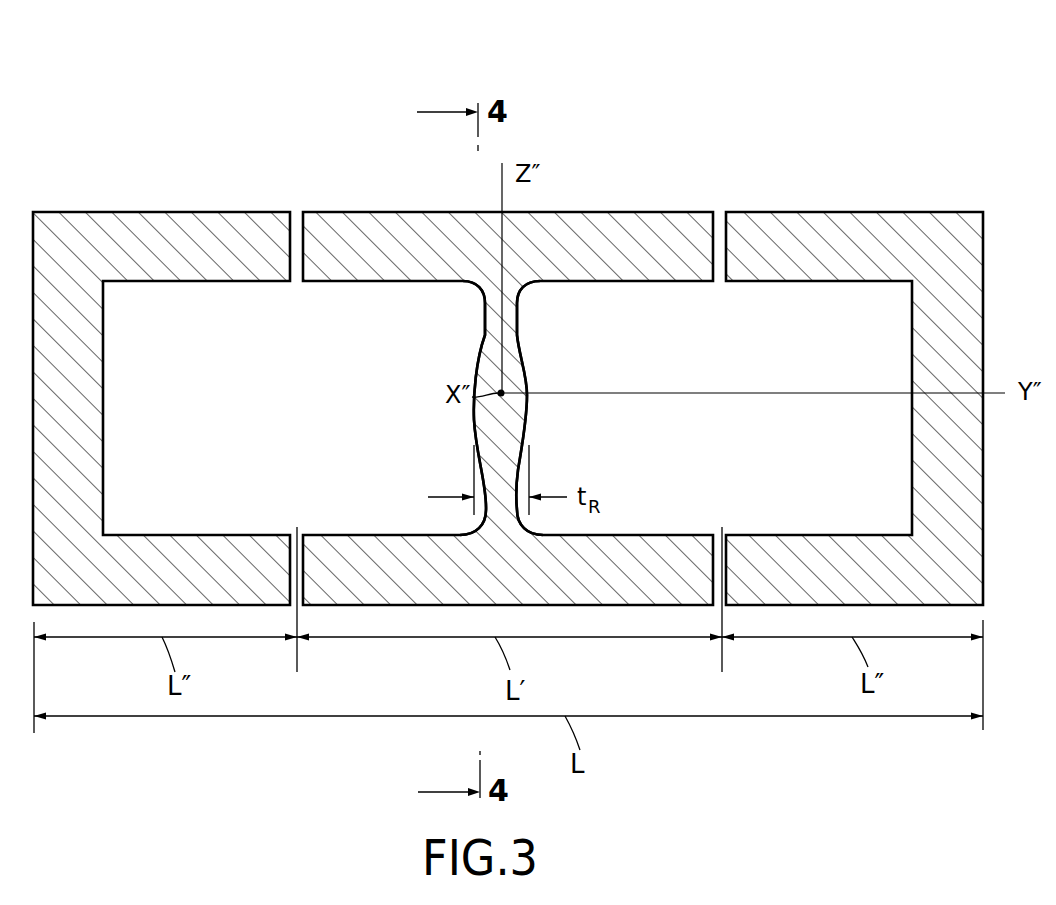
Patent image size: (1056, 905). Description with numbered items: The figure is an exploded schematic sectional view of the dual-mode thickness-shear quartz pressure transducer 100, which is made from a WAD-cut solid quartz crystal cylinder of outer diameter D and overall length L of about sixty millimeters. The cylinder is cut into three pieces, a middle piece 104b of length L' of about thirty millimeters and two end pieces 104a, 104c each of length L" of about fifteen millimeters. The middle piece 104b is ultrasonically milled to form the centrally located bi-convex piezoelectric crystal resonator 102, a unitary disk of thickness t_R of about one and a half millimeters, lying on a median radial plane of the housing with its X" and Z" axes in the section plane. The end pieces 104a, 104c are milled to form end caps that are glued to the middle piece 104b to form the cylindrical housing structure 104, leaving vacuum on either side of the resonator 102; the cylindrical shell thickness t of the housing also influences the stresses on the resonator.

The dual-mode thickness-shear quartz pressure transducer 100 is at (540, 317).
The piezoelectric crystal resonator 102 is at (527, 372).
The cylindrical housing structure 104 is at (508, 373).
The end piece 104a is at (202, 211).
The middle piece 104b is at (385, 211).
The end piece 104c is at (889, 211).